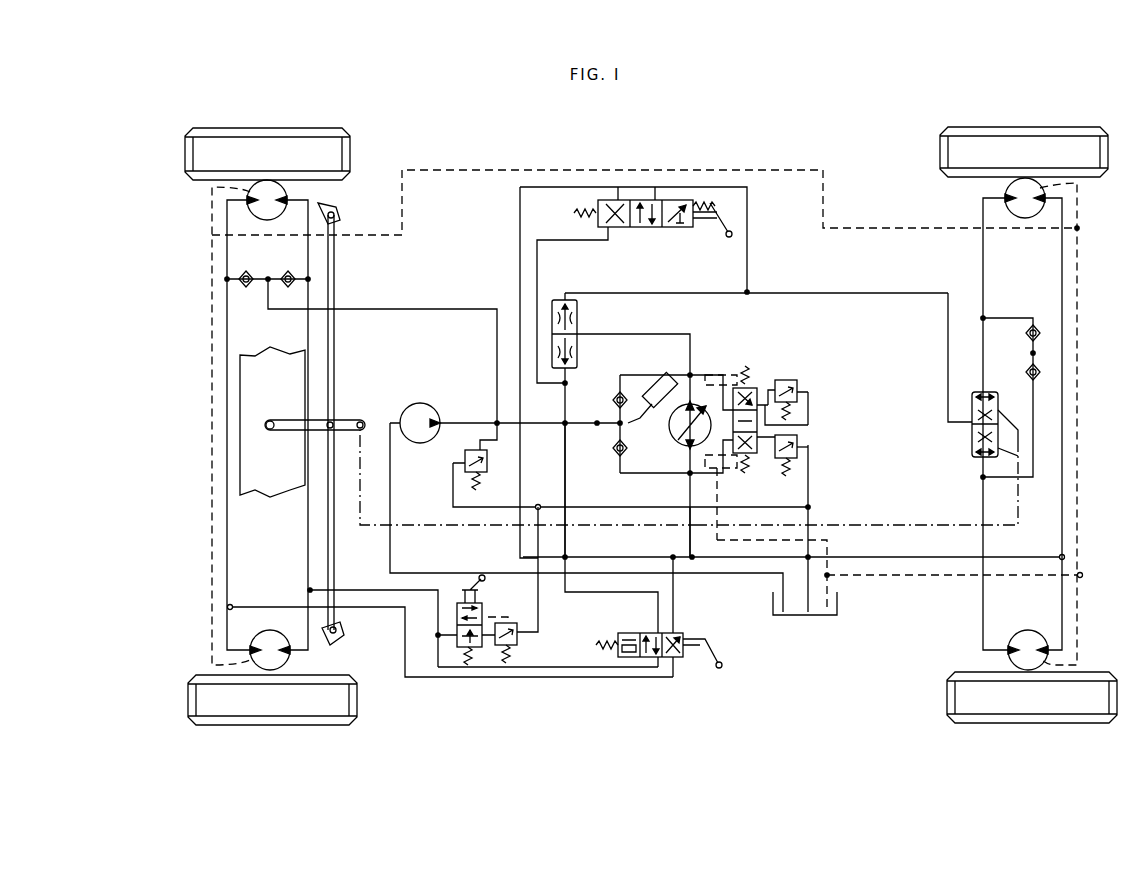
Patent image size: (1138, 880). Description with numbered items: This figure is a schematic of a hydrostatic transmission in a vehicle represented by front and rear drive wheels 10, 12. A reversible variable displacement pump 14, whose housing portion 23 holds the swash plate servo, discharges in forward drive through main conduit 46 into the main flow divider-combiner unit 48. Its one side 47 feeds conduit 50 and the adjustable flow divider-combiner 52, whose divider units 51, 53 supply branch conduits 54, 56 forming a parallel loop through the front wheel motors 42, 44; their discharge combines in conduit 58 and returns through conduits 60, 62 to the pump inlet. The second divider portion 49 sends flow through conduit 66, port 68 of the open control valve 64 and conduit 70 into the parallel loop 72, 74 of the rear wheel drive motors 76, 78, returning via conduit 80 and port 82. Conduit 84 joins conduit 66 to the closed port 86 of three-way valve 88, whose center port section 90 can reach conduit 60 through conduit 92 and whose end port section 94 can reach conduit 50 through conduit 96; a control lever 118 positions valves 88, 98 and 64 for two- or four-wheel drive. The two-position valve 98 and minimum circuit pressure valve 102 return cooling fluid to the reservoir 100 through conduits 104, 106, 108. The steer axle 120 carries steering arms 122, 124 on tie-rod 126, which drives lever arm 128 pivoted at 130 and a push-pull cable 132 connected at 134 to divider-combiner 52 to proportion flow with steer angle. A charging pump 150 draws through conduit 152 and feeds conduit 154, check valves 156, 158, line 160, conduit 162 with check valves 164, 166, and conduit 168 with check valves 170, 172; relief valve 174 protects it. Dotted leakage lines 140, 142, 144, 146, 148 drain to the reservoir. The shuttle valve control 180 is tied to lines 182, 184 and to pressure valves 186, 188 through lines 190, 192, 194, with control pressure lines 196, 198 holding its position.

The front drive wheels 10 is at (997, 140).
The rear drive wheels 12 is at (243, 140).
The variable displacement pump 14 is at (688, 445).
The pump housing portion 23 is at (662, 380).
The front wheel motor 42 is at (1019, 190).
The front wheel motor 44 is at (1028, 654).
The main pump discharge conduit 46 is at (636, 334).
The flow divider side 47 is at (577, 320).
The main flow divider-combiner unit 48 is at (565, 300).
The second flow divider portion 49 is at (577, 351).
The conduit 50 is at (788, 292).
The divider unit 51 is at (972, 396).
The adjustable flow divider-combiner 52 is at (994, 404).
The divider unit 53 is at (972, 446).
The branch conduit 54 is at (988, 264).
The branch conduit 56 is at (989, 555).
The conduit 58 is at (1062, 506).
The conduit 60 is at (882, 559).
The conduit 62 is at (688, 550).
The control valve 64 is at (678, 662).
The conduit 66 is at (564, 473).
The port 68 is at (644, 660).
The conduit 70 is at (508, 670).
The parallel loop conduit 72 is at (306, 546).
The parallel loop conduit 74 is at (229, 528).
The rear wheel drive motor 76 is at (267, 190).
The rear wheel drive motor 78 is at (272, 654).
The conduit 80 is at (430, 678).
The port 82 is at (684, 640).
The conduit 84 is at (526, 250).
The closed port 86 is at (588, 210).
The three-way valve 88 is at (674, 200).
The center port section 90 is at (650, 227).
The conduit 92 is at (520, 276).
The end port section 94 is at (682, 228).
The conduit 96 is at (747, 240).
The two-position valve 98 is at (470, 652).
The reservoir 100 is at (806, 616).
The minimum circuit pressure valve 102 is at (522, 646).
The conduit 104 is at (528, 552).
The conduit 106 is at (602, 538).
The conduit 108 is at (810, 522).
The control lever 118 is at (732, 230).
The steer axle 120 is at (240, 446).
The steering arm 122 is at (338, 206).
The steering arm 124 is at (339, 642).
The tie-rod 126 is at (334, 347).
The lever arm 128 is at (348, 420).
The pivot 130 is at (272, 420).
The push-pull cable 132 is at (430, 524).
The cable connection 134 is at (1023, 436).
The fluid leakage line 140 is at (211, 332).
The fluid leakage line 142 is at (759, 164).
The fluid leakage line 144 is at (1085, 307).
The fluid leakage line 146 is at (905, 582).
The fluid leakage line 148 is at (830, 550).
The charging pump 150 is at (420, 403).
The conduit 152 is at (388, 538).
The conduit 154 is at (470, 423).
The one-way check valve 156 is at (618, 456).
The one-way check valve 158 is at (616, 392).
The line 160 is at (648, 417).
The conduit 162 is at (932, 348).
The low pressure one-way check valve 164 is at (1033, 324).
The low pressure one-way check valve 166 is at (1042, 374).
The conduit 168 is at (370, 309).
The low pressure one-way check valve 170 is at (246, 287).
The low pressure one-way check valve 172 is at (290, 270).
The relief valve 174 is at (453, 465).
The reversing shuttle valve control 180 is at (752, 368).
The line 182 is at (732, 390).
The line 184 is at (745, 474).
The maximum pump pressure control valve 186 is at (798, 380).
The minimum pump pressure control valve 188 is at (805, 460).
The line 190 is at (800, 412).
The line 192 is at (811, 414).
The line 194 is at (800, 438).
The control pressure line 196 is at (717, 372).
The control pressure line 198 is at (704, 468).